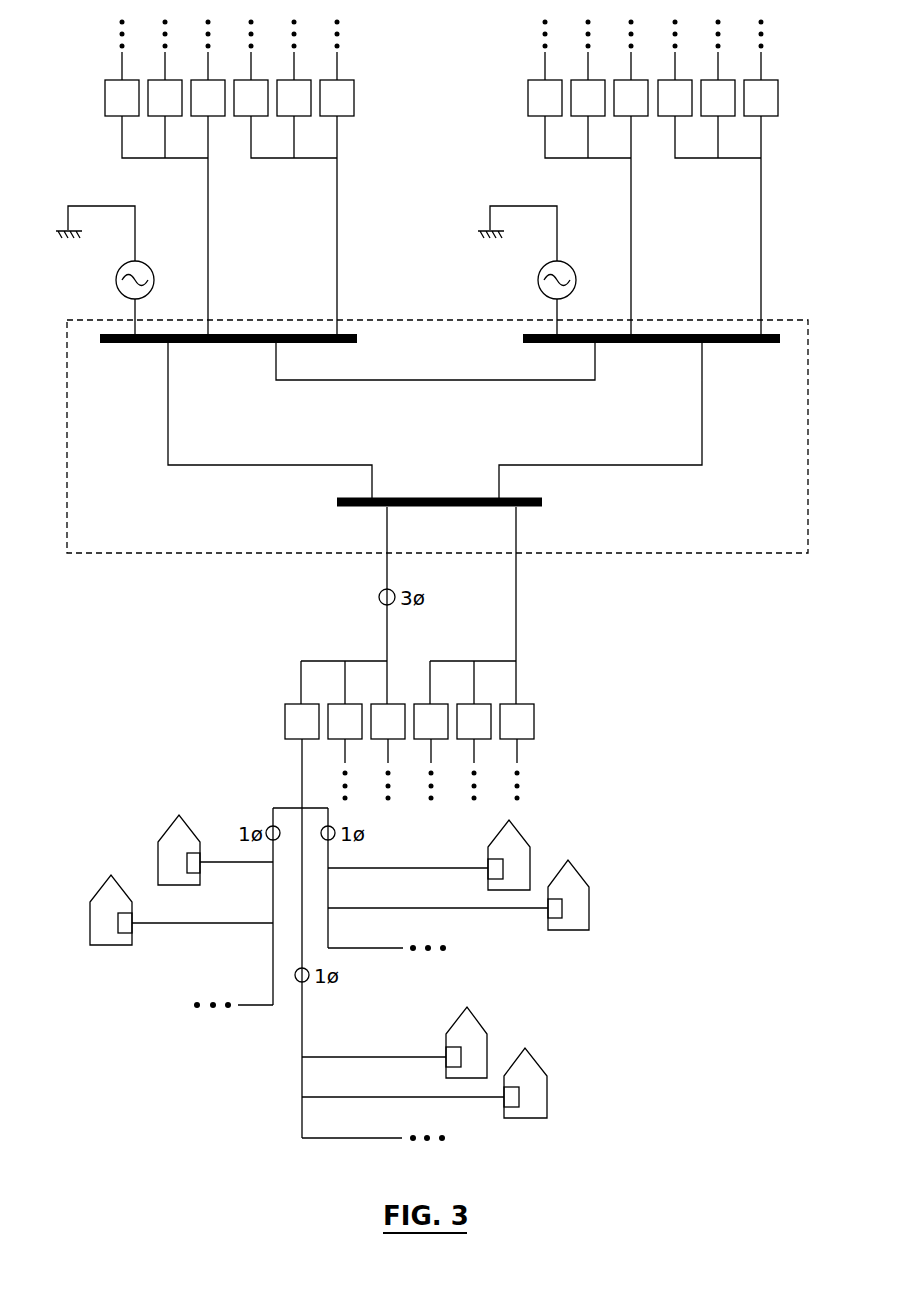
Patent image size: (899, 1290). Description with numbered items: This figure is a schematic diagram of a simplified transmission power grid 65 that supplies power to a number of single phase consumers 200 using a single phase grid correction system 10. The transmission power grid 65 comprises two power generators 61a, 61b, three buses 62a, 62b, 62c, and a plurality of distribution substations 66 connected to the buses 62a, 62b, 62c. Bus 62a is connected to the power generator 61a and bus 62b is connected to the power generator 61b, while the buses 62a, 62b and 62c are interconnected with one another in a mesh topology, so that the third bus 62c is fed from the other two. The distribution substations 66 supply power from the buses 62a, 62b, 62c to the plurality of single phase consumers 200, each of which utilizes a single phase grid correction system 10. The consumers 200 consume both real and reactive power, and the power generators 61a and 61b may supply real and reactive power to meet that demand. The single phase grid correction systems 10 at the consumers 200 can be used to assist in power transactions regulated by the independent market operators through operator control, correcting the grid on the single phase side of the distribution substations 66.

The single phase grid correction system 10 is at (237, 795).
The single phase consumers 200 is at (123, 888).
The power generator 61a is at (150, 266).
The power generator 61b is at (572, 266).
The bus 62a is at (143, 345).
The bus 62b is at (727, 345).
The bus 62c is at (545, 503).
The transmission power grid 65 is at (785, 318).
The distribution substations 66 is at (355, 97).